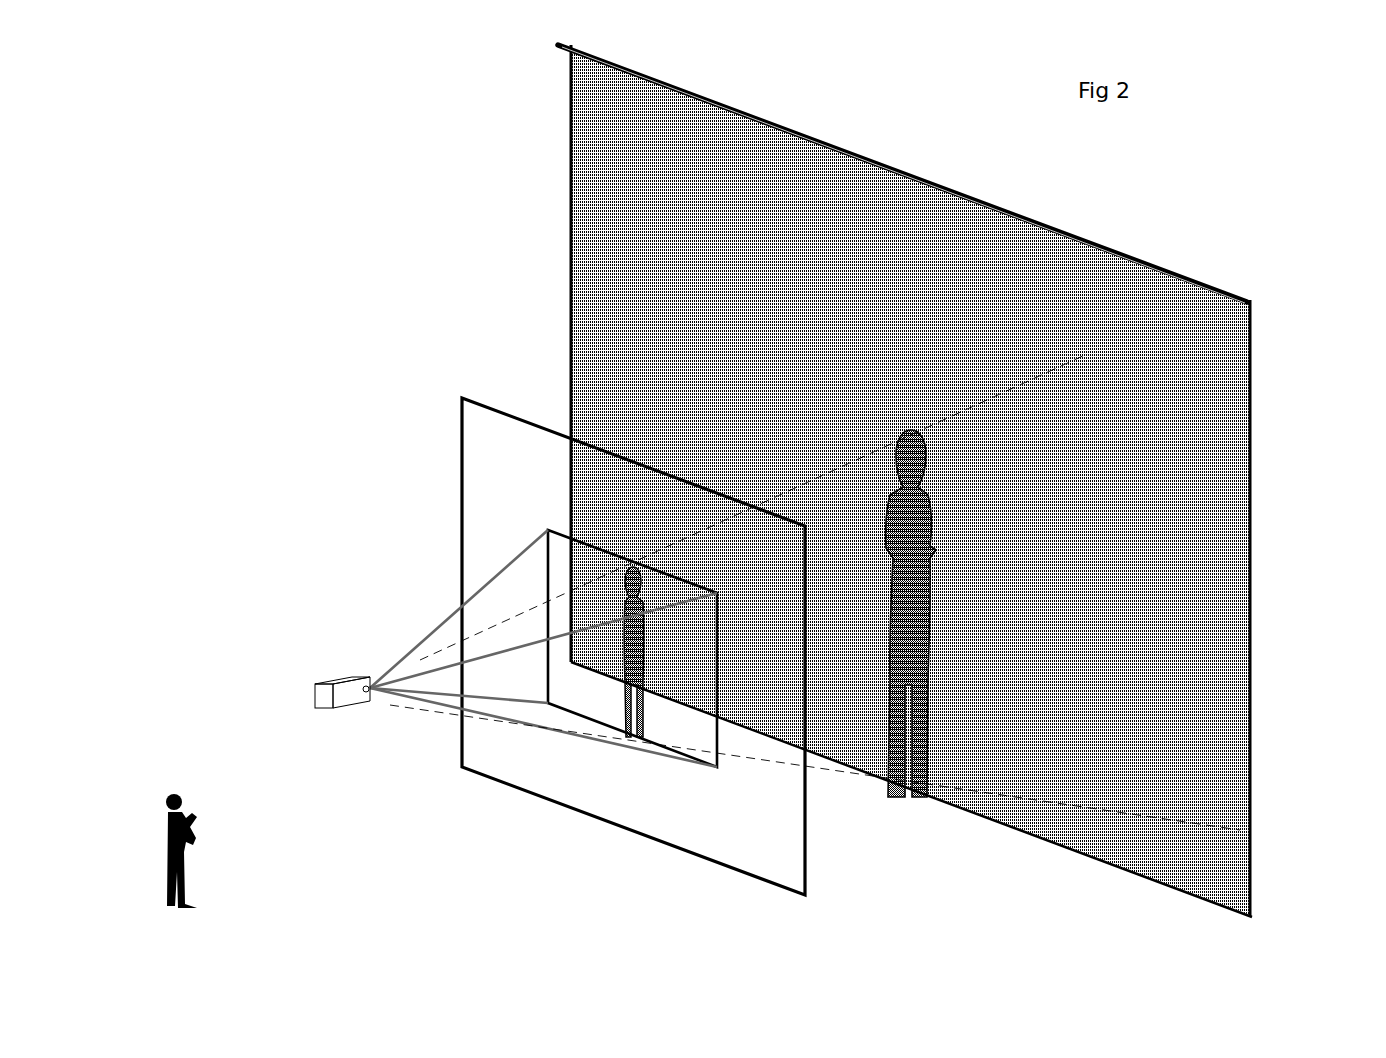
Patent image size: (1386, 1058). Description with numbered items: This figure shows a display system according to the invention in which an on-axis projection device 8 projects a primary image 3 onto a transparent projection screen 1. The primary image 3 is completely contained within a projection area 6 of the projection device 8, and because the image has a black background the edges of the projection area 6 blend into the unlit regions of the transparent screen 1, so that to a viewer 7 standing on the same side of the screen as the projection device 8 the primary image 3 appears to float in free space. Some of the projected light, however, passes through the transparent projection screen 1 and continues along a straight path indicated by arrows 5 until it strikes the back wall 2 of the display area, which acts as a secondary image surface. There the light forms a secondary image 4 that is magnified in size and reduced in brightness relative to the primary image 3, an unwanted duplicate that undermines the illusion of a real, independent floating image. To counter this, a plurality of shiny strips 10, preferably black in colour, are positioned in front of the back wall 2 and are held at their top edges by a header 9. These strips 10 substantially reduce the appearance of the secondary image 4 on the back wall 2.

The transparent projection screen 1 is at (478, 400).
The back wall 2 is at (1257, 490).
The primary image 3 is at (622, 604).
The secondary image 4 is at (937, 549).
The arrows 5 is at (445, 640).
The projection area 6 is at (702, 768).
The viewer 7 is at (187, 792).
The projection device 8 is at (333, 706).
The header 9 is at (1243, 297).
The shiny strips 10 is at (797, 203).